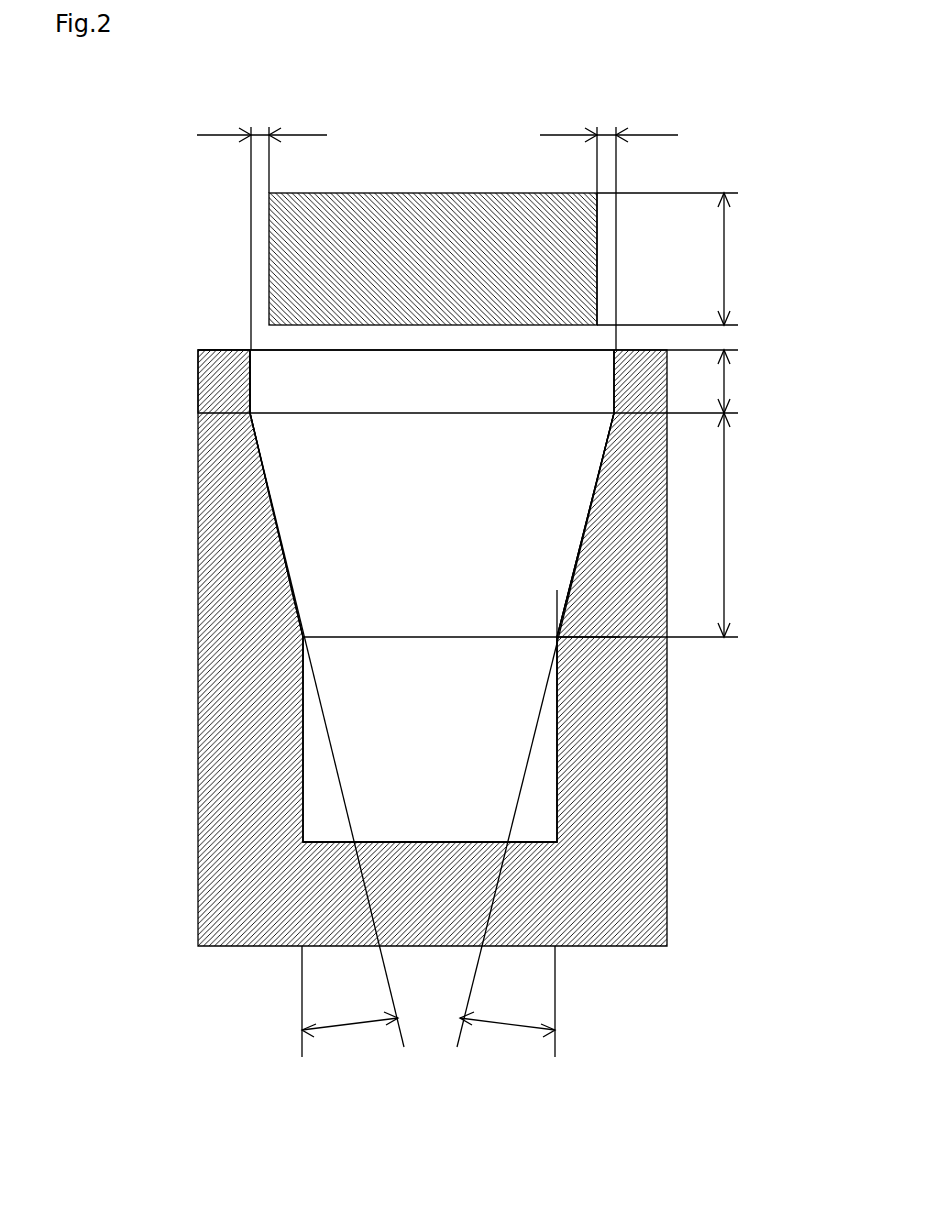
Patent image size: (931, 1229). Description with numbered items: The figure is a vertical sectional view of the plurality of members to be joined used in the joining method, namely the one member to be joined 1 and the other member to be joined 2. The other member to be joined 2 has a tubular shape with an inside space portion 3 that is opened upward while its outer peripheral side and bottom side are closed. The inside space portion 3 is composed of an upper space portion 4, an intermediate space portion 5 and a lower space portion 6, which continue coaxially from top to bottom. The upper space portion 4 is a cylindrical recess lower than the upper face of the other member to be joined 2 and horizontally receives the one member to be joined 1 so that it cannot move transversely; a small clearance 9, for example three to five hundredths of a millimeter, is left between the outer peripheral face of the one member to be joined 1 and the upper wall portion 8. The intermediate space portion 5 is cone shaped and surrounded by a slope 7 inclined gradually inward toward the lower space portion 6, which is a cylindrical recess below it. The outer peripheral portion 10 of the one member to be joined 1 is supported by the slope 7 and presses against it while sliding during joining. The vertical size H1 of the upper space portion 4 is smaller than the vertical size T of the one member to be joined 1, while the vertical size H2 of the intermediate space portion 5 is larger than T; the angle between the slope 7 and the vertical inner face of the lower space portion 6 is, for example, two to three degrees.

The one member to be joined 1 is at (437, 192).
The other member to be joined 2 is at (196, 362).
The inside space portion 3 is at (150, 402).
The upper space portion 4 is at (265, 394).
The intermediate space portion 5 is at (325, 505).
The lower space portion 6 is at (345, 691).
The slope 7 is at (567, 600).
The upper wall portion 8 is at (225, 350).
The clearance 9 is at (260, 133).
The outer peripheral portion 10 is at (583, 292).
The vertical size of the one member to be joined T is at (728, 250).
The vertical size of the upper space portion H1 is at (728, 385).
The vertical size of the intermediate space portion H2 is at (728, 522).